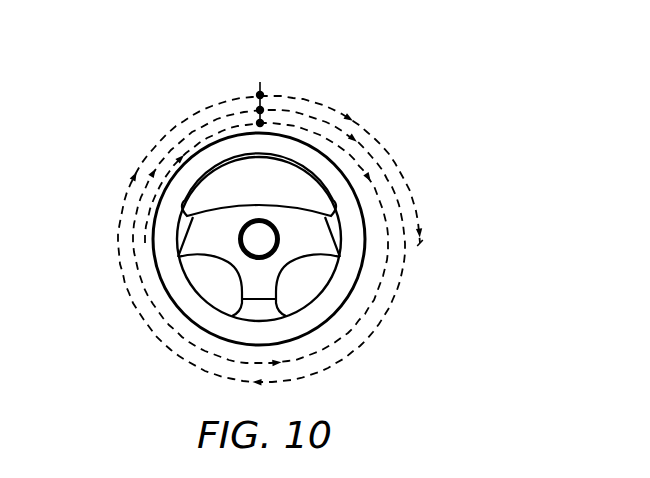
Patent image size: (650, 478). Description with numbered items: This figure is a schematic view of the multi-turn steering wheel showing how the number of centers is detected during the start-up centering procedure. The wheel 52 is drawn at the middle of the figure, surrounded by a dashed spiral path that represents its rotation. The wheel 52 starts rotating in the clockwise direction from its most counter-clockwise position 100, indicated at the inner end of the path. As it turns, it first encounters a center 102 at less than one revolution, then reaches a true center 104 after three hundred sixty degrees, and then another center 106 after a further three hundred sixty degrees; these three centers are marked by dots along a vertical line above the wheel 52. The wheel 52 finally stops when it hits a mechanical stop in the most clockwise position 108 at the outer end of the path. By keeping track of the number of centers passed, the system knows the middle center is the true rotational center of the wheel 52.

The wheel 52 is at (307, 255).
The most counter-clockwise position 100 is at (226, 240).
The center 102 is at (345, 103).
The true center 104 is at (203, 91).
The center 106 is at (350, 85).
The most clockwise position 108 is at (480, 268).